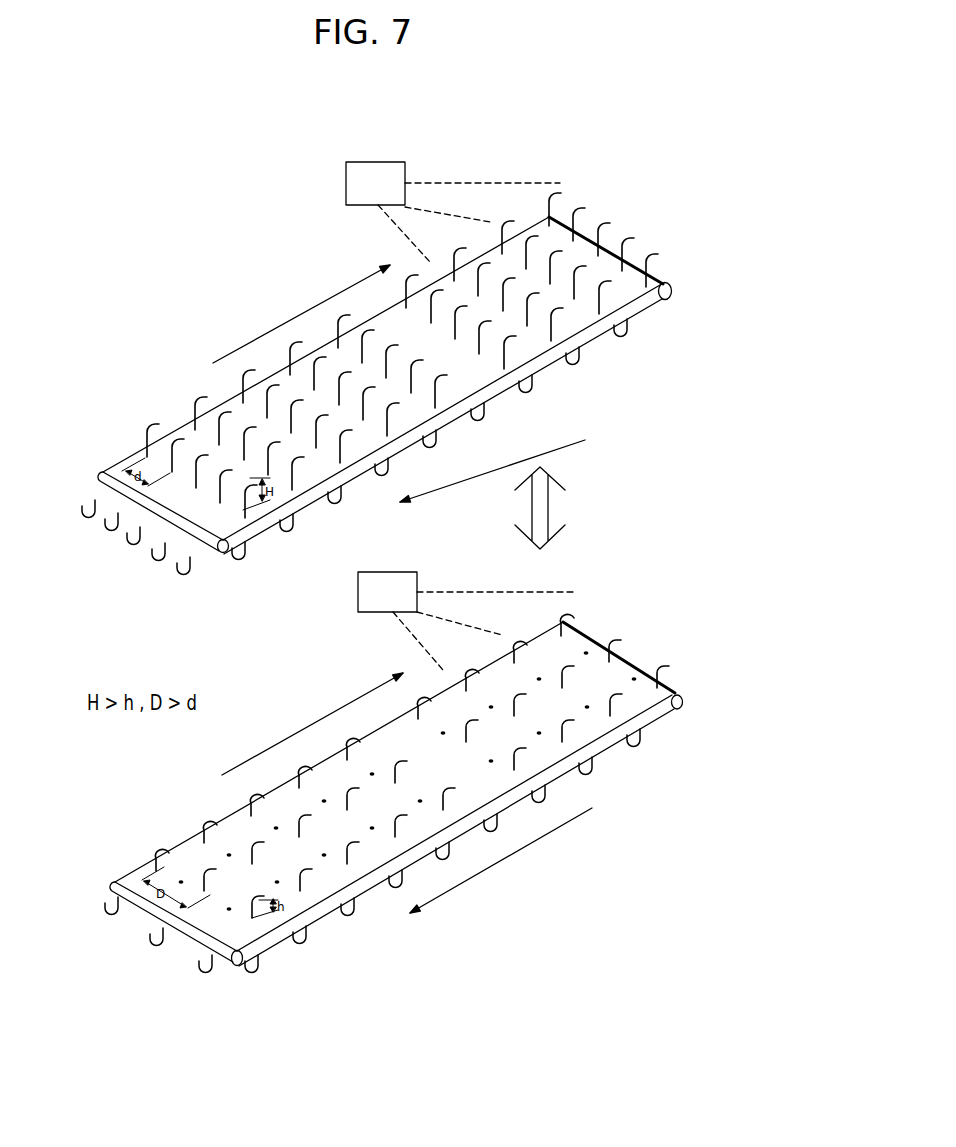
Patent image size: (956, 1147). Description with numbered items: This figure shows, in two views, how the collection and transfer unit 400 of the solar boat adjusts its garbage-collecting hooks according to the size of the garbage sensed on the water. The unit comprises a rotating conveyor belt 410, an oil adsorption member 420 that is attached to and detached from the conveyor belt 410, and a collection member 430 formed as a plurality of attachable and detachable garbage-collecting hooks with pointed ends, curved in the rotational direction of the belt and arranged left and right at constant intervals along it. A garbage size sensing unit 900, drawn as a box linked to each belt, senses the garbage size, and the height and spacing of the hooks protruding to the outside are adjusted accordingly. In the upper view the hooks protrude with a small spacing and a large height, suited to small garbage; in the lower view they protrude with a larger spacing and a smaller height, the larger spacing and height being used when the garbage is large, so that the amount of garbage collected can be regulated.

The garbage size sensing unit 900 is at (346, 180).
The collection and transfer unit 400 is at (372, 636).
The conveyor belt 410 is at (238, 543).
The oil adsorption member 420 is at (207, 513).
The collection member 430 is at (222, 622).